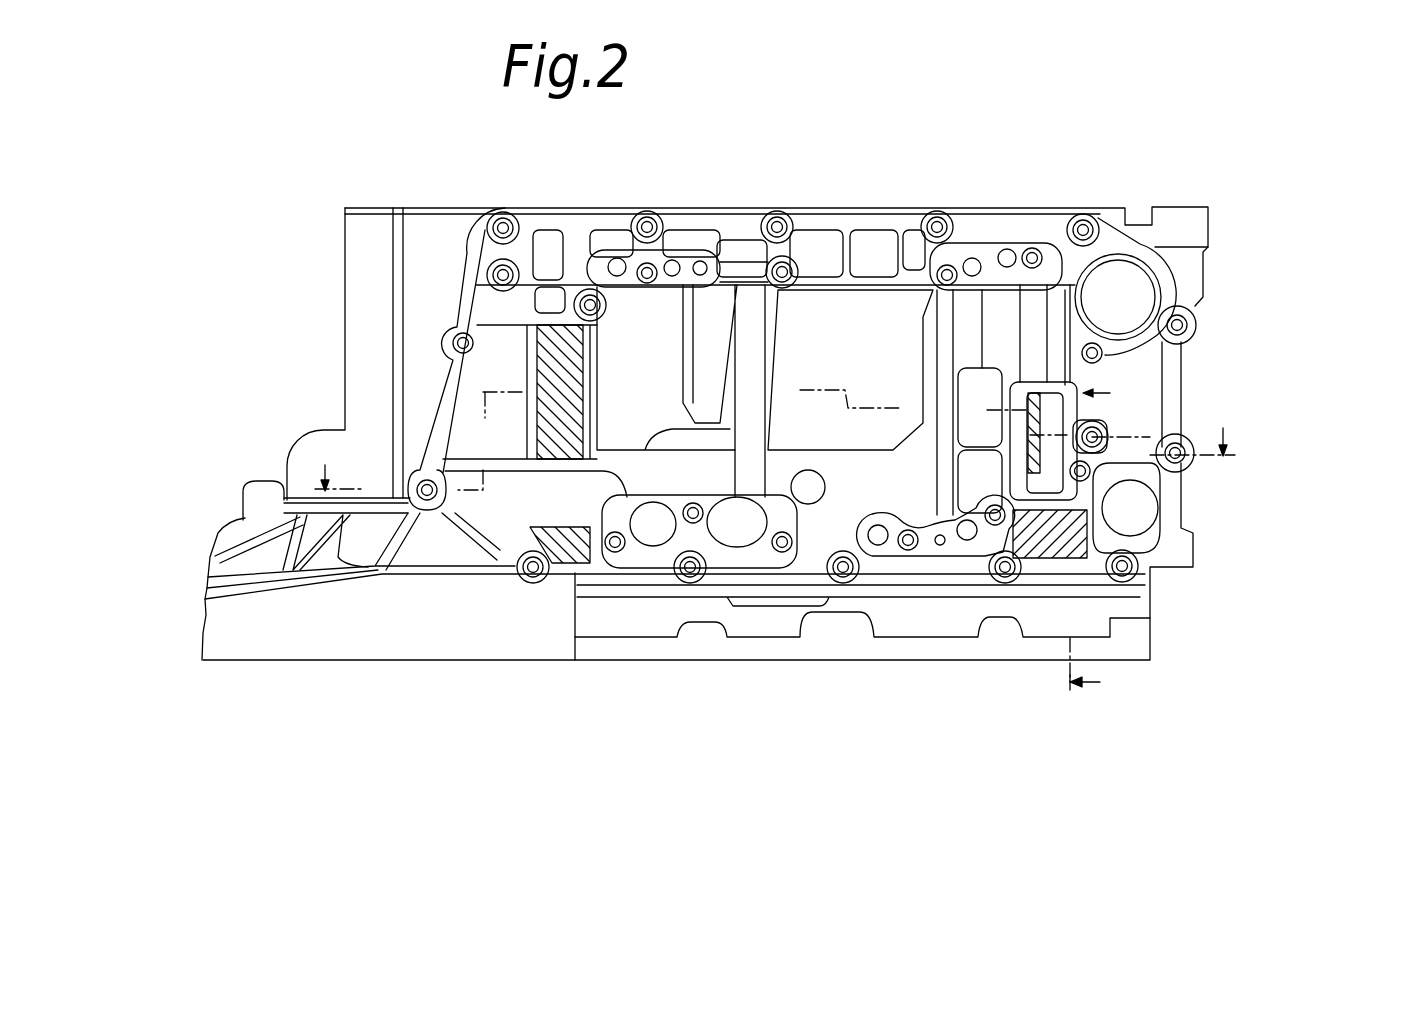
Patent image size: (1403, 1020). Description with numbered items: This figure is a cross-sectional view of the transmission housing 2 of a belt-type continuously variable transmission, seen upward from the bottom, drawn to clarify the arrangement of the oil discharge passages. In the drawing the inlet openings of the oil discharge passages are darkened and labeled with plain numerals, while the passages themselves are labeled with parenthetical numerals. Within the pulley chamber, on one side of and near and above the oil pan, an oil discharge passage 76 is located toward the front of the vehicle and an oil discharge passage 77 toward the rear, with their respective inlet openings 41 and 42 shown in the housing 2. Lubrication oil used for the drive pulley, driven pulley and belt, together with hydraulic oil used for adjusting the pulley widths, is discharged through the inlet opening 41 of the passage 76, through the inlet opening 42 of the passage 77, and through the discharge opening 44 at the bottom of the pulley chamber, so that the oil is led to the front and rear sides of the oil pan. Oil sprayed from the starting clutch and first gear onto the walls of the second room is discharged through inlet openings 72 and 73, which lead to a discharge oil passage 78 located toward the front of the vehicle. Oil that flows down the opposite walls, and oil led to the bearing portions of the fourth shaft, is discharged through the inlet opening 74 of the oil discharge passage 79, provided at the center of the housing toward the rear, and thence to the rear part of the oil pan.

The transmission housing 2 is at (342, 258).
The discharge opening 44 is at (862, 317).
The inlet opening 42 is at (548, 425).
The oil discharge passage 77 is at (398, 411).
The inlet opening 41 is at (1035, 421).
The oil discharge passage 76 is at (1155, 430).
The inlet opening 72 is at (1127, 573).
The inlet opening 73 is at (1151, 573).
The discharge oil passage 78 is at (1181, 573).
The inlet opening 74 is at (570, 545).
The oil discharge passage 79 is at (519, 631).